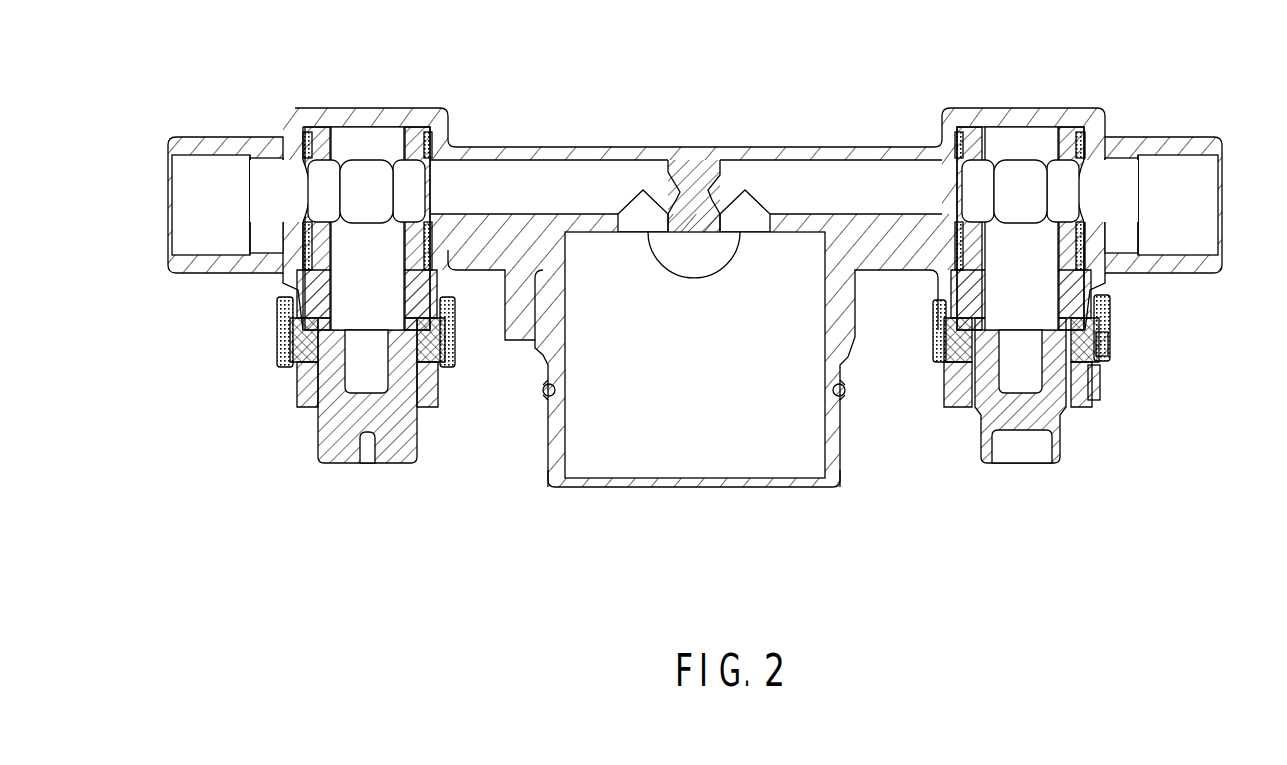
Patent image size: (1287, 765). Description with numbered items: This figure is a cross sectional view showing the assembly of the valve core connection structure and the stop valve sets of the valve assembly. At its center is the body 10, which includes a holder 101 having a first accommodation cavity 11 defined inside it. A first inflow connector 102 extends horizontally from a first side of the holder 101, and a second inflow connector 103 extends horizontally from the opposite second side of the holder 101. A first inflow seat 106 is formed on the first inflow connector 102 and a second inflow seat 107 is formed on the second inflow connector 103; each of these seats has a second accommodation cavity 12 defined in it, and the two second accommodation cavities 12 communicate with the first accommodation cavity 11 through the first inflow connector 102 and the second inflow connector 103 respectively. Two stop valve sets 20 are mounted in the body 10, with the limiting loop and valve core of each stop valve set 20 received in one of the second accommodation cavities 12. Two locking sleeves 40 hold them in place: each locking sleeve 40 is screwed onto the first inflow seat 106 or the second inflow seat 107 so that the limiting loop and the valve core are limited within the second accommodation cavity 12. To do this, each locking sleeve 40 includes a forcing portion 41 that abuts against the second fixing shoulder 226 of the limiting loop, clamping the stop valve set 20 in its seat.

The body 10 is at (693, 147).
The first accommodation cavity 11 is at (668, 460).
The second accommodation cavity 12 is at (455, 315).
The stop valve set 20 is at (351, 473).
The locking sleeve 40 is at (288, 393).
The forcing portion 41 is at (1108, 343).
The holder 101 is at (549, 438).
The first inflow connector 102 is at (197, 275).
The second inflow connector 103 is at (1205, 275).
The first inflow seat 106 is at (282, 290).
The second inflow seat 107 is at (945, 290).
The second fixing shoulder 226 is at (1100, 377).